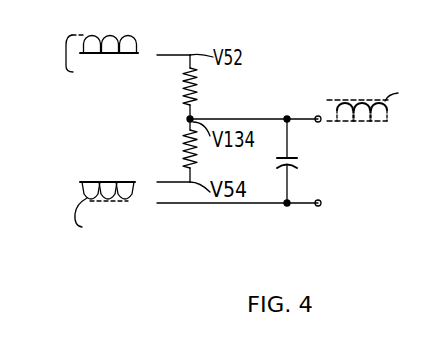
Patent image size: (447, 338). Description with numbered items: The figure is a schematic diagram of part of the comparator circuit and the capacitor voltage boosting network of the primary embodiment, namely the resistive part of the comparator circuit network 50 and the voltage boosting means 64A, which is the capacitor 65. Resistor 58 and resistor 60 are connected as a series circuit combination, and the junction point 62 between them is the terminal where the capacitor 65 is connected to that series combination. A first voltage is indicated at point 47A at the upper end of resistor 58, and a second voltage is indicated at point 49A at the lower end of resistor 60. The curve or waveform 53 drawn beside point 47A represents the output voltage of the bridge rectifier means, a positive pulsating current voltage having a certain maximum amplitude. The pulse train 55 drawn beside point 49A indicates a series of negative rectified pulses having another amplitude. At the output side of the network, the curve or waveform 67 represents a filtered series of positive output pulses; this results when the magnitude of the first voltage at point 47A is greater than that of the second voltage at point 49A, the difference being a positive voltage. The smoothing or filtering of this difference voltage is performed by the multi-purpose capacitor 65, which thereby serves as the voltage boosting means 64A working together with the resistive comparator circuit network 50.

The curve or waveform 53 is at (95, 37).
The point 47A is at (157, 55).
The resistor 58 is at (185, 88).
The junction point 62 is at (192, 118).
The resistor 60 is at (184, 147).
The point 49A is at (157, 182).
The pulse train 55 is at (135, 195).
The capacitor 65 is at (293, 168).
The curve or waveform 67 is at (387, 118).
The comparator circuit network 50 is at (162, 270).
The voltage boosting means 64A is at (269, 270).